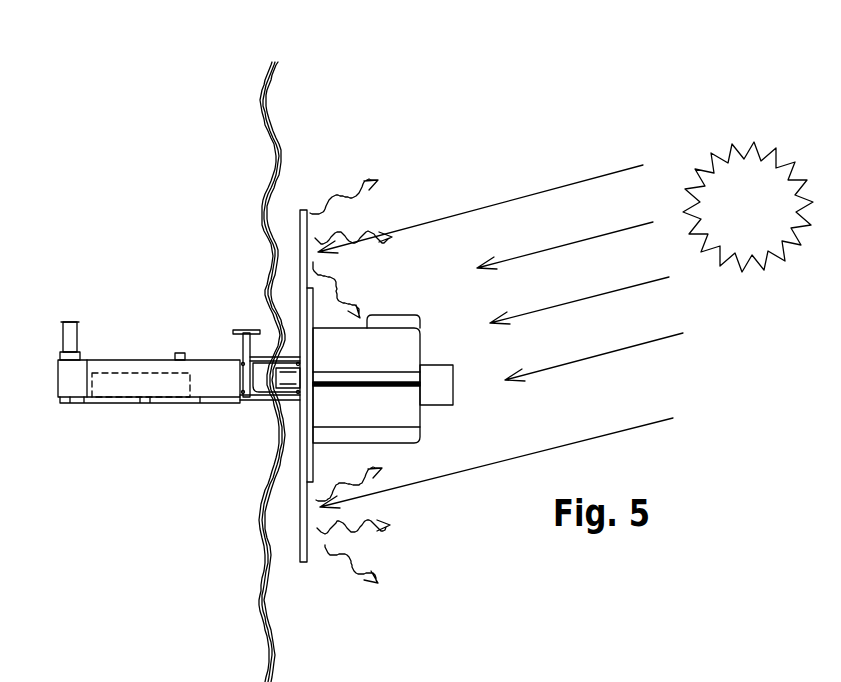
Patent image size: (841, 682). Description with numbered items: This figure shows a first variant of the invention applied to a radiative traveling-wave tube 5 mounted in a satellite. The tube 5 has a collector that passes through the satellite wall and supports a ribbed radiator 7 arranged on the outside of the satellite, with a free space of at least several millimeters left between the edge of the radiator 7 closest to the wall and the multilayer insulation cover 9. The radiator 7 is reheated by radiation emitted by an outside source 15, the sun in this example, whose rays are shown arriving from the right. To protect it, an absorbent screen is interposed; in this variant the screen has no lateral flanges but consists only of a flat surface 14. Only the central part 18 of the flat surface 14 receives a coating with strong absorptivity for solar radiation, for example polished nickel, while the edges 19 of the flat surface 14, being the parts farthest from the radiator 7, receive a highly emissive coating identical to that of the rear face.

The traveling-wave tube 5 is at (119, 346).
The ribbed radiator 7 is at (413, 416).
The multilayer insulation cover 9 is at (265, 88).
The flat surface 14 is at (300, 437).
The outside source 15 is at (700, 136).
The central part 18 is at (332, 461).
The edges 19 is at (329, 545).